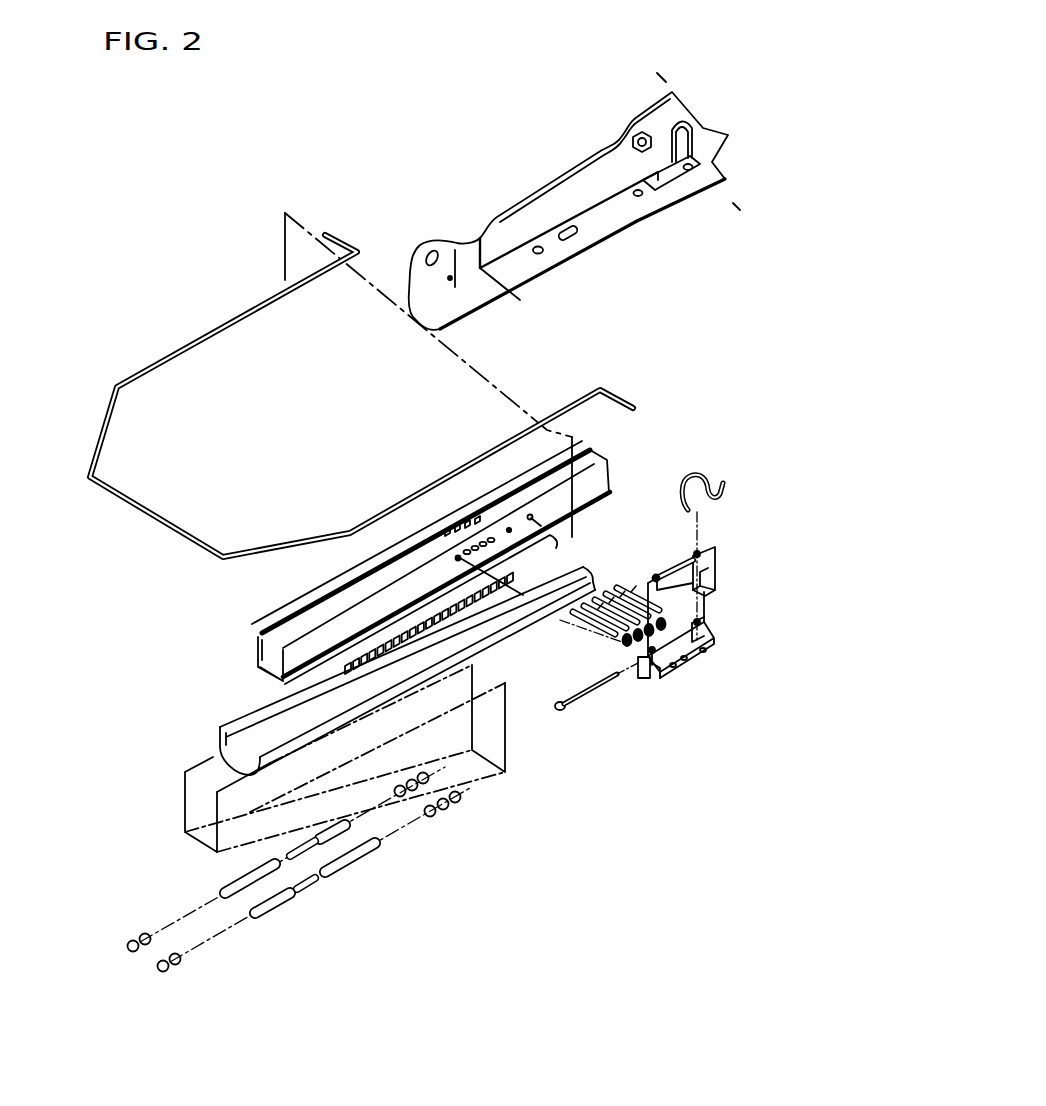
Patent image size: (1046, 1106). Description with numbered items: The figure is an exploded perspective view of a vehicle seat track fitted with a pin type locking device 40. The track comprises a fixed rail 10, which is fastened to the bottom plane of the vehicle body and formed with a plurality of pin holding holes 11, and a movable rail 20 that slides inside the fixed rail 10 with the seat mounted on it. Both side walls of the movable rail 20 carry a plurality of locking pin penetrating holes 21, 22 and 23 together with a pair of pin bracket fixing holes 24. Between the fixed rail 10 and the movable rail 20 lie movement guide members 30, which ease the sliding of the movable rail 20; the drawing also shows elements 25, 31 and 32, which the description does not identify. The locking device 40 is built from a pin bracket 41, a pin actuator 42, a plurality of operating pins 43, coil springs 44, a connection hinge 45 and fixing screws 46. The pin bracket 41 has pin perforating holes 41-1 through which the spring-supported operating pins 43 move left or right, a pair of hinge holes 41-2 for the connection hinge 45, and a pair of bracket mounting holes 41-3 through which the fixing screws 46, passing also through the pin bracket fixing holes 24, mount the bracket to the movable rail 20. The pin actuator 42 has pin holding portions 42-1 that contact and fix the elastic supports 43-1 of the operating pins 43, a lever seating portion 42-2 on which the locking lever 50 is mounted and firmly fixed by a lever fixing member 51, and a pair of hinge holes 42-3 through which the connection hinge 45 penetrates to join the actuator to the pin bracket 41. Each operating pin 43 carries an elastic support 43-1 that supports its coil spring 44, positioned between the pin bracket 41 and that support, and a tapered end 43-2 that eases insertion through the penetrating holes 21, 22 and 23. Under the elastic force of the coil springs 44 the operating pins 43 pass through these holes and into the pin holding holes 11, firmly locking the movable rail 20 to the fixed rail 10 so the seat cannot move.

The fixed rail 10 is at (310, 709).
The pin holding holes 11 is at (350, 667).
The movable rail 20 is at (336, 523).
The locking pin penetrating hole 21 is at (510, 530).
The locking pin penetrating hole 22 is at (493, 513).
The locking pin penetrating hole 23 is at (432, 537).
The pin bracket fixing holes 24 is at (458, 558).
The mounting bracket 25 is at (500, 236).
The movement guide members 30 is at (299, 890).
The ball ends 31 is at (182, 958).
The rod segments 32 is at (363, 855).
The pin type locking device 40 is at (701, 595).
The pin bracket 41 is at (765, 684).
The pin perforating holes 41-1 is at (758, 663).
The hinge holes 41-2 is at (709, 626).
The bracket mounting holes 41-3 is at (648, 668).
The pin actuator 42 is at (764, 535).
The pin holding portions 42-1 is at (703, 606).
The lever seating portion 42-2 is at (712, 578).
The hinge holes 42-3 is at (700, 556).
The operating pins 43 is at (614, 595).
The elastic support 43-1 is at (604, 620).
The tapered end 43-2 is at (603, 597).
The coil springs 44 is at (690, 661).
The connection hinge 45 is at (582, 708).
The fixing screws 46 is at (658, 673).
The locking lever 50 is at (189, 342).
The lever fixing member 51 is at (707, 472).